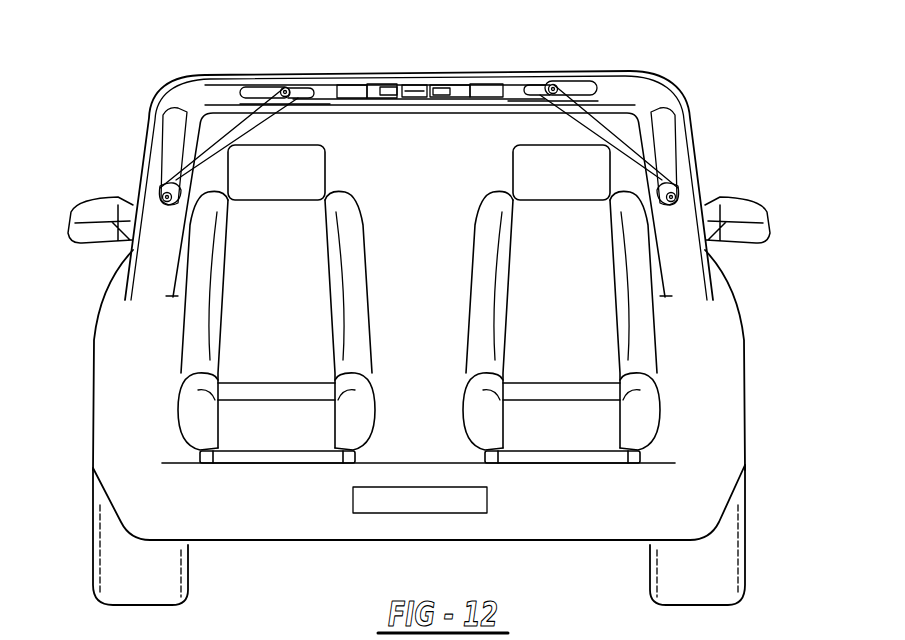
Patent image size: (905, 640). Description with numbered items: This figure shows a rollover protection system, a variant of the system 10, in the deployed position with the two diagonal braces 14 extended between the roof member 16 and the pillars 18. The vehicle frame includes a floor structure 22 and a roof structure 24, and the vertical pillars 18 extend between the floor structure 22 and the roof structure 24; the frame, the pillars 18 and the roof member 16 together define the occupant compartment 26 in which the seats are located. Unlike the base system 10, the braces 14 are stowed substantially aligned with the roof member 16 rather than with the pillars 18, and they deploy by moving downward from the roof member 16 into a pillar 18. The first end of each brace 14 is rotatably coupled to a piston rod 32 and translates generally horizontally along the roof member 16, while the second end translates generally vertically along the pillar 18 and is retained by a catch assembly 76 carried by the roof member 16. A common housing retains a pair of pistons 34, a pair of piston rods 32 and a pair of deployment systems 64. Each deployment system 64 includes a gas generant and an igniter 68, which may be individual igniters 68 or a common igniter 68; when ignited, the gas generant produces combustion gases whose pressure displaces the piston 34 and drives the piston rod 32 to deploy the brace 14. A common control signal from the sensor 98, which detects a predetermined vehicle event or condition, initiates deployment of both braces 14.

The rollover protection system 10 is at (642, 60).
The brace 14 is at (232, 118).
The roof member 16 is at (564, 72).
The pillar 18 is at (135, 182).
The floor structure 22 is at (330, 510).
The roof structure 24 is at (282, 72).
The occupant compartment 26 is at (410, 173).
The piston rod 32 is at (326, 90).
The piston 34 is at (307, 93).
The deployment system 64 is at (385, 91).
The igniter 68 is at (411, 90).
The catch assembly 76 is at (158, 188).
The sensor 98 is at (453, 503).